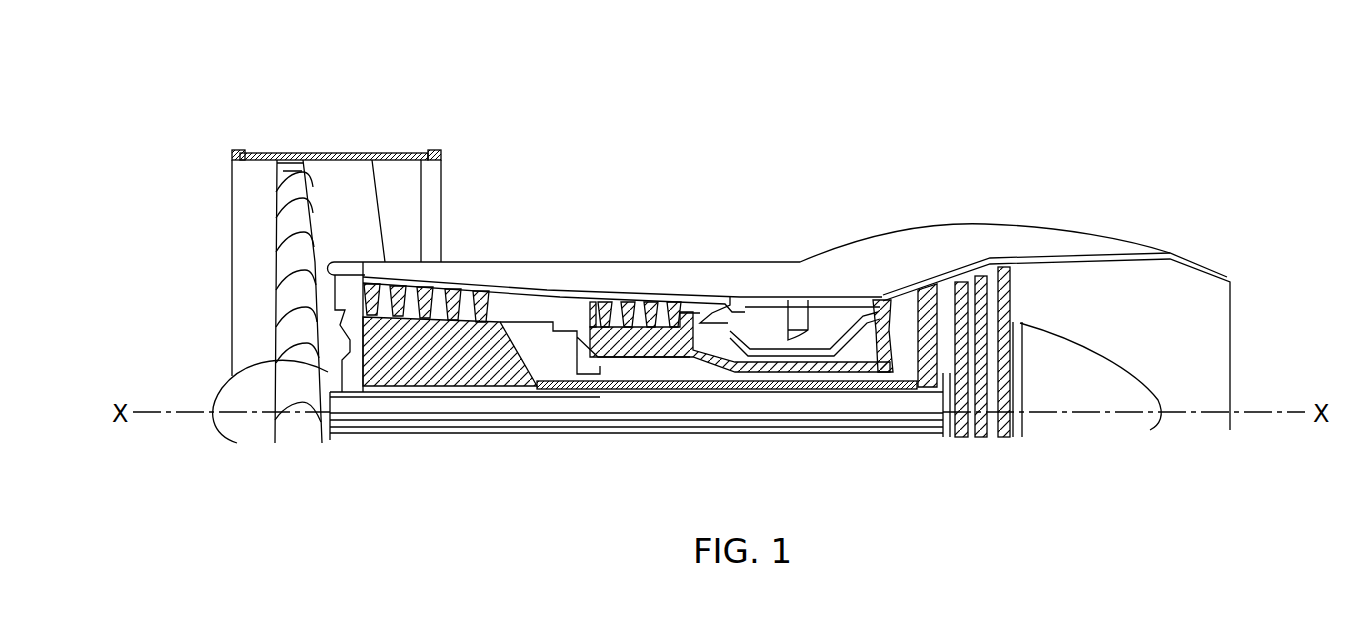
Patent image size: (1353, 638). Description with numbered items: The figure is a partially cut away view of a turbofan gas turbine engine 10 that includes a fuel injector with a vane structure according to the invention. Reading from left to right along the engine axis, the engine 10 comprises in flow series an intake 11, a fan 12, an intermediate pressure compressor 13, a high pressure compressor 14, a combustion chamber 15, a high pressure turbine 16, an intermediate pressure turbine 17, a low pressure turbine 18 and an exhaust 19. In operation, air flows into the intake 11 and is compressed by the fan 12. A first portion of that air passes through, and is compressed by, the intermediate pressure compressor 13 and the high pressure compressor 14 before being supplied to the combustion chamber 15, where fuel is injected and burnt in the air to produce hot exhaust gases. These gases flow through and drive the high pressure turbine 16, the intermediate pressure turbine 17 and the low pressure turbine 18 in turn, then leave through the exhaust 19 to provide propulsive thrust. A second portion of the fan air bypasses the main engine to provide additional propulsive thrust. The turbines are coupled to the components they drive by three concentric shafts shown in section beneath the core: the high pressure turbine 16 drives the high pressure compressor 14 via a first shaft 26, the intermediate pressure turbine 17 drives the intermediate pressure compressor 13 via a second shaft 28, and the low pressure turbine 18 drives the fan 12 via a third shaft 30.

The turbofan gas turbine engine 10 is at (611, 184).
The intake 11 is at (205, 280).
The fan 12 is at (292, 178).
The intermediate pressure compressor 13 is at (443, 330).
The high pressure compressor 14 is at (636, 310).
The combustion chamber 15 is at (803, 280).
The high pressure turbine 16 is at (887, 300).
The intermediate pressure turbine 17 is at (926, 297).
The low pressure turbine 18 is at (987, 263).
The exhaust 19 is at (1213, 353).
The first shaft 26 is at (857, 373).
The second shaft 28 is at (574, 393).
The third shaft 30 is at (502, 436).